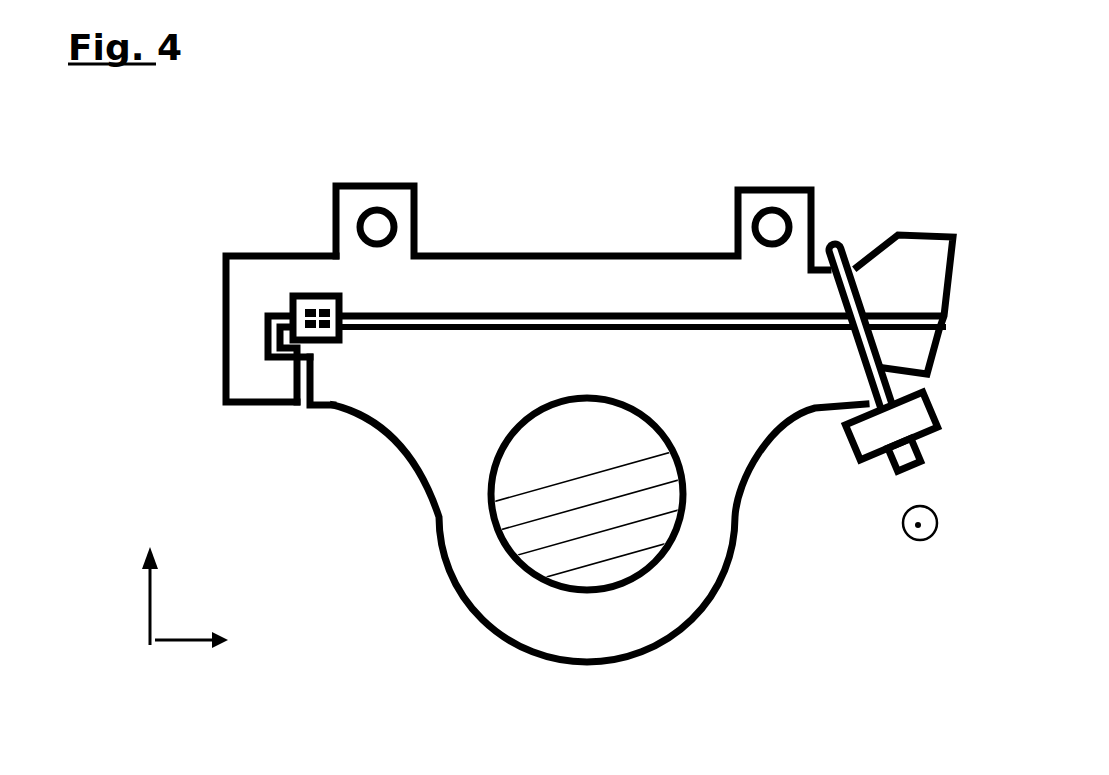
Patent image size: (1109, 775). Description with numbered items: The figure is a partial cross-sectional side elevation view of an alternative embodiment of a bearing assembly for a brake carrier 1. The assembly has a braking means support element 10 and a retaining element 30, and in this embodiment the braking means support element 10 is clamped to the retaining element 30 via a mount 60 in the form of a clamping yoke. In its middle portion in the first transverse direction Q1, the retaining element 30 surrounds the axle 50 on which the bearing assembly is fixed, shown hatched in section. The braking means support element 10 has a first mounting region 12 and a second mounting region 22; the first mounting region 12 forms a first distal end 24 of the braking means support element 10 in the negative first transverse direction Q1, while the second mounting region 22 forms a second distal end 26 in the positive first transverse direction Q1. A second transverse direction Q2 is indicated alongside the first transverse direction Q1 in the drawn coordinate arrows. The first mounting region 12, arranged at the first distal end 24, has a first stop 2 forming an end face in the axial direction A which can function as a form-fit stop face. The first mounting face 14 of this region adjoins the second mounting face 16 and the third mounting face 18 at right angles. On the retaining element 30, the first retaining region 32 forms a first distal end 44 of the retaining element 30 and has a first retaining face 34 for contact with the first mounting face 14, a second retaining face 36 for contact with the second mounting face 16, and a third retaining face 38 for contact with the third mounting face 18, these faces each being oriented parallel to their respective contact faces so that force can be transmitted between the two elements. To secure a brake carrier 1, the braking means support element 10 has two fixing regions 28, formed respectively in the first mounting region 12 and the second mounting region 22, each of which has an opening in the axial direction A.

The brake carrier 1 is at (625, 152).
The first stop 2 is at (313, 306).
The braking means support element 10 is at (543, 277).
The first mounting region 12 is at (219, 329).
The first distal end 24 is at (211, 306).
The first mounting face 14 is at (268, 342).
The second mounting face 16 is at (287, 238).
The second retaining face 36 is at (343, 298).
The third mounting face 18 is at (306, 421).
The third retaining face 38 is at (293, 407).
The second mounting region 22 is at (903, 251).
The second distal end 26 is at (921, 203).
The fixing regions 28 is at (372, 203).
The retaining element 30 is at (707, 528).
The first retaining face 34 is at (270, 360).
The first distal end 44 is at (346, 472).
The first retaining region 32 is at (320, 442).
The axle 50 is at (617, 543).
The mount 60 is at (868, 432).
The first transverse direction Q1 is at (185, 640).
The second direction Q2 is at (147, 600).
The axial direction A is at (933, 537).